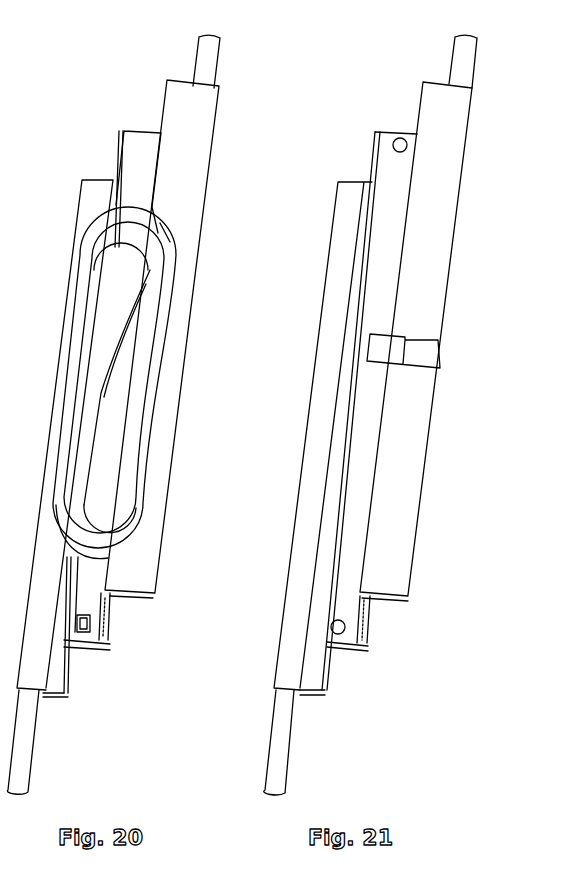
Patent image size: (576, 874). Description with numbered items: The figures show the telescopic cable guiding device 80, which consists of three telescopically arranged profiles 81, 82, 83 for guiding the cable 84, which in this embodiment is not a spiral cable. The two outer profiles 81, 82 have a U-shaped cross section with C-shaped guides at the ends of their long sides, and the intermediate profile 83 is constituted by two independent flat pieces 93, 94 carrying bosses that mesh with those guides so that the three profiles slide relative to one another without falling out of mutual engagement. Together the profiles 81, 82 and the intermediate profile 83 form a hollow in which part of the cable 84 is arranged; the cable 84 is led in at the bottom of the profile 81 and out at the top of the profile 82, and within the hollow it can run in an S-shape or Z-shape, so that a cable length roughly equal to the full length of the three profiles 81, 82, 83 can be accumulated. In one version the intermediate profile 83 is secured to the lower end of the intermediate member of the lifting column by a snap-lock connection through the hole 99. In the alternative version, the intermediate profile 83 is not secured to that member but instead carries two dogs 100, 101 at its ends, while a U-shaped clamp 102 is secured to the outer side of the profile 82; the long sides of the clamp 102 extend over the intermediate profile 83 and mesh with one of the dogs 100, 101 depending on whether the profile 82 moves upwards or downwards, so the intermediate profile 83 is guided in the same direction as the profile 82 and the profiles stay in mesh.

In FIG. 20, the telescopic cable guiding device 80 is at (56, 90).
In FIG. 21, the telescopic cable guiding device 80 is at (313, 110).
In FIG. 20, the profile 81 is at (67, 402).
In FIG. 21, the profile 81 is at (328, 428).
In FIG. 20, the profile 82 is at (135, 578).
In FIG. 21, the profile 82 is at (408, 532).
In FIG. 20, the intermediate profile 83 is at (145, 122).
In FIG. 21, the intermediate profile 83 is at (402, 122).
In FIG. 20, the cable 84 is at (268, 783).
In FIG. 21, the cable 84 is at (465, 67).
In FIG. 20, the flat piece 93 is at (122, 135).
In FIG. 21, the flat piece 93 is at (388, 167).
In FIG. 20, the flat piece 94 is at (108, 640).
In FIG. 21, the flat piece 94 is at (367, 645).
In FIG. 20, the hole 99 is at (85, 632).
In FIG. 21, the dog 100 is at (395, 138).
In FIG. 21, the dog 101 is at (339, 635).
In FIG. 21, the U-shaped clamp 102 is at (432, 357).